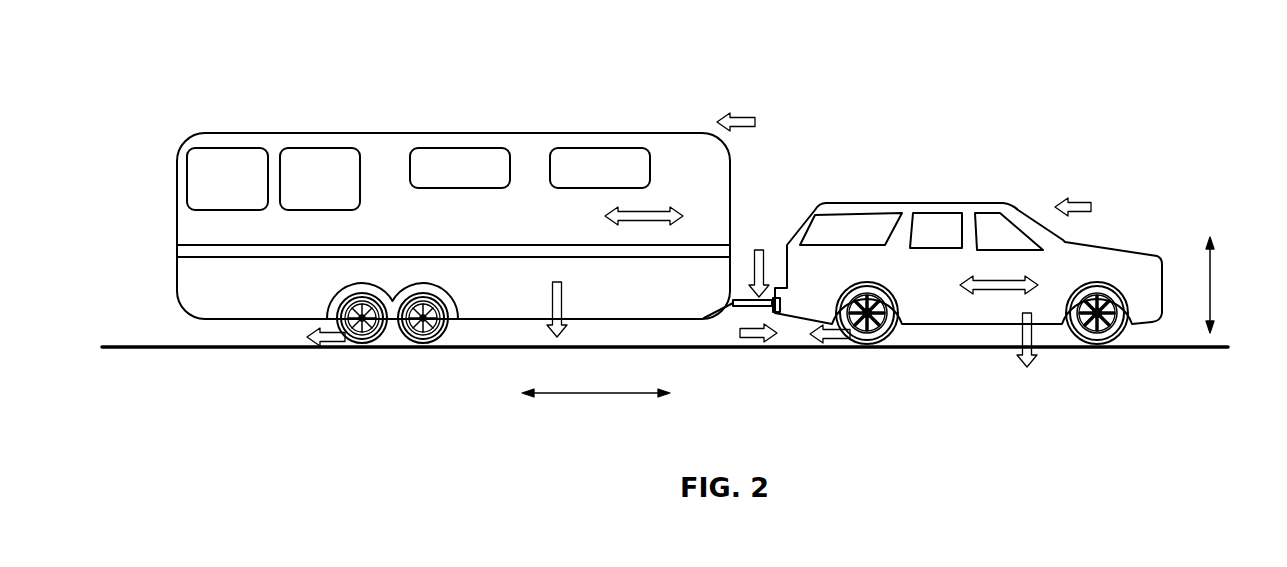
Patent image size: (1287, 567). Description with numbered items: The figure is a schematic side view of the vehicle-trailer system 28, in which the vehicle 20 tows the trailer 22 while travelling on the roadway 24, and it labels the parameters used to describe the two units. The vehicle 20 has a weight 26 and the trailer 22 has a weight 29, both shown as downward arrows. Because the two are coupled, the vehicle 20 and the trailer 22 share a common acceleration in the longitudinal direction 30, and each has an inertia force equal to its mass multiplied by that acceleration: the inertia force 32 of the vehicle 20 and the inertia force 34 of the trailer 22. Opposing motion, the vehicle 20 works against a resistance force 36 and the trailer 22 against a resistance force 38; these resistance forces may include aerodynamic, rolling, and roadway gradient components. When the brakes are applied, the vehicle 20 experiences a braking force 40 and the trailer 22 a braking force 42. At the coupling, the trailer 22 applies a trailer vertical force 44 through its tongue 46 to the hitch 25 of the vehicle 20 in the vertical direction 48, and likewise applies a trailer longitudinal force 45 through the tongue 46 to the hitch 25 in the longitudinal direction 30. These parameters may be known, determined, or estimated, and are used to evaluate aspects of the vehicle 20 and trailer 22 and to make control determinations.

The vehicle 20 is at (944, 204).
The trailer 22 is at (601, 131).
The roadway 24 is at (160, 346).
The hitch 25 is at (779, 312).
The weight of the vehicle 26 is at (1033, 350).
The vehicle-trailer system 28 is at (828, 72).
The weight of the trailer 29 is at (563, 303).
The longitudinal direction 30 is at (590, 393).
The inertia force of the vehicle 32 is at (1000, 290).
The inertia force of the trailer 34 is at (645, 226).
The resistance force of the vehicle 36 is at (1078, 200).
The resistance force of the trailer 38 is at (735, 117).
The braking force of the vehicle 40 is at (830, 342).
The braking force of the trailer 42 is at (330, 346).
The trailer vertical force 44 is at (762, 264).
The trailer longitudinal force 45 is at (757, 340).
The tongue 46 is at (737, 307).
The vertical direction 48 is at (1212, 285).